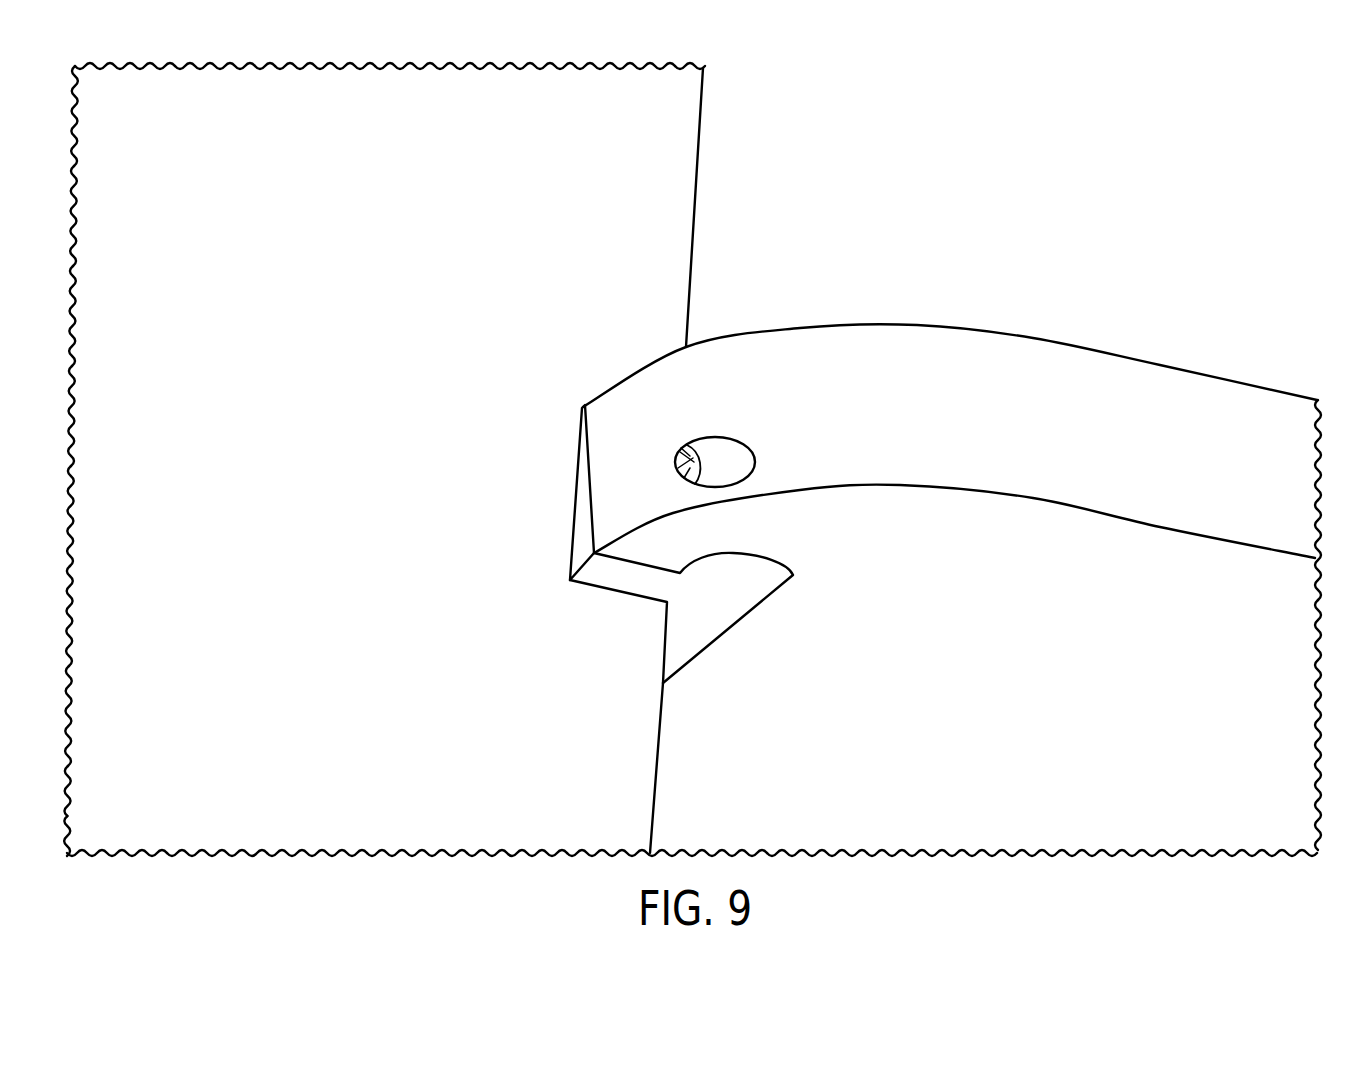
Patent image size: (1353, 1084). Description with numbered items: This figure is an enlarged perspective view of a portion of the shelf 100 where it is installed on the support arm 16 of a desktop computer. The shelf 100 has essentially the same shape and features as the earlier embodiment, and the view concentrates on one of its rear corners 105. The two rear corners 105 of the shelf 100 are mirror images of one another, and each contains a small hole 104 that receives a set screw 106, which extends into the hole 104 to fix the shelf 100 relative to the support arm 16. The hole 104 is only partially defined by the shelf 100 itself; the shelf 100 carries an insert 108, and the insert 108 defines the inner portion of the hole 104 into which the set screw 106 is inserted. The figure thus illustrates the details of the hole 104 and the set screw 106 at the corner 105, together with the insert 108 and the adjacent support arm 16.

The support arm 16 is at (690, 178).
The shelf 100 is at (909, 555).
The hole 104 is at (713, 437).
The rear corner 105 is at (838, 355).
The set screw 106 is at (692, 448).
The insert 108 is at (574, 508).